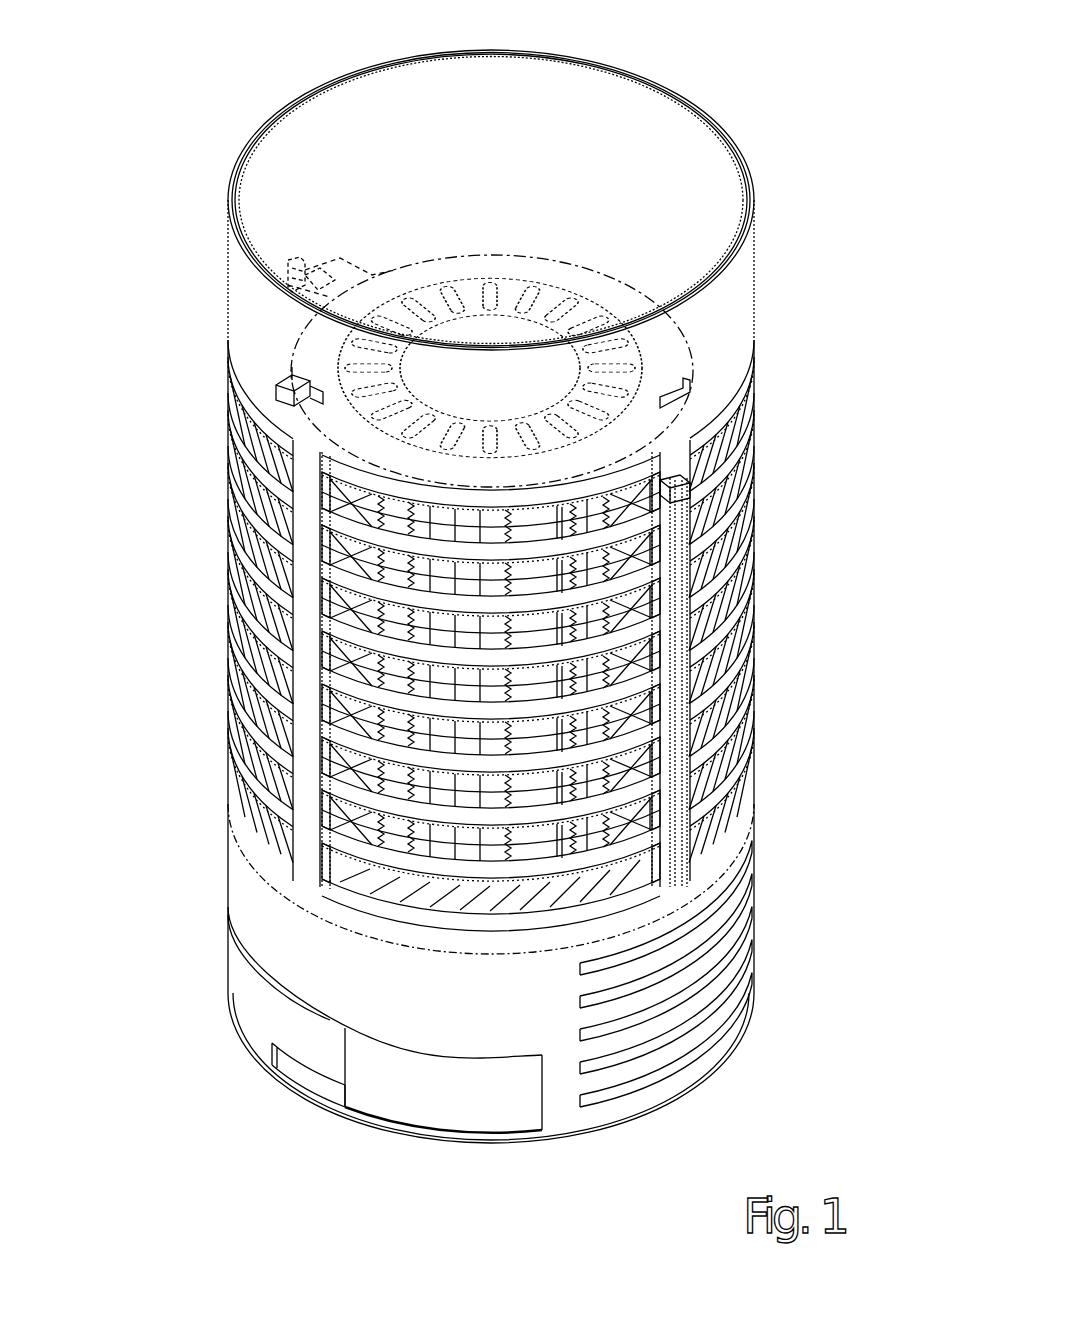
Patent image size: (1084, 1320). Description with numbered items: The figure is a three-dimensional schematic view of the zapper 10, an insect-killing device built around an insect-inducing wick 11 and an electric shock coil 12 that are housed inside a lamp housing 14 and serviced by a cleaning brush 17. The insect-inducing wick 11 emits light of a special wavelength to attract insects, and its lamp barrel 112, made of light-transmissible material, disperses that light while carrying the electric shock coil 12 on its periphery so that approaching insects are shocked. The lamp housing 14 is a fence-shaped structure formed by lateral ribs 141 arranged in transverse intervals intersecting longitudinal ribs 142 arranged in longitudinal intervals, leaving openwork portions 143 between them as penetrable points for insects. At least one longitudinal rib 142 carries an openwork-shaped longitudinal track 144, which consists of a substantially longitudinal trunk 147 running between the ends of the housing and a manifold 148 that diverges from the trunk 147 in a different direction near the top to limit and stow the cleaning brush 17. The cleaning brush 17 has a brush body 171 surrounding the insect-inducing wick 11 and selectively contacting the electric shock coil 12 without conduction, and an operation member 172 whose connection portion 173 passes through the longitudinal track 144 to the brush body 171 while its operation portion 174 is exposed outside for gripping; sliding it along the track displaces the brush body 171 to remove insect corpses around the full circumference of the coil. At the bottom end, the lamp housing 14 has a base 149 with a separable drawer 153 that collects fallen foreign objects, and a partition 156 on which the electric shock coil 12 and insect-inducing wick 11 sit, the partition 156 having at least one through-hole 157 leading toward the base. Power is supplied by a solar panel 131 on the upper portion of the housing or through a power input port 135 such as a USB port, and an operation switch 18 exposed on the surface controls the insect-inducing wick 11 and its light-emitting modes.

The zapper 10 is at (790, 22).
The insect-inducing wick 11 is at (576, 830).
The lamp barrel 112 is at (590, 773).
The electric shock coil 12 is at (582, 643).
The solar panel 131 is at (683, 130).
The power input port 135 is at (690, 372).
The lamp housing 14 is at (224, 498).
The lateral ribs 141 is at (298, 552).
The longitudinal ribs 142 is at (300, 622).
The openwork portions 143 is at (258, 754).
The longitudinal track 144 is at (773, 666).
The trunk 147 is at (677, 560).
The manifold 148 is at (690, 496).
The base 149 is at (243, 878).
The drawer 153 is at (240, 975).
The partition 156 is at (520, 897).
The through-hole 157 is at (475, 897).
The cleaning brush 17 is at (541, 254).
The brush body 171 is at (412, 295).
The operation member 172 is at (160, 218).
The connection portion 173 is at (287, 297).
The operation portion 174 is at (247, 238).
The operation switch 18 is at (273, 380).